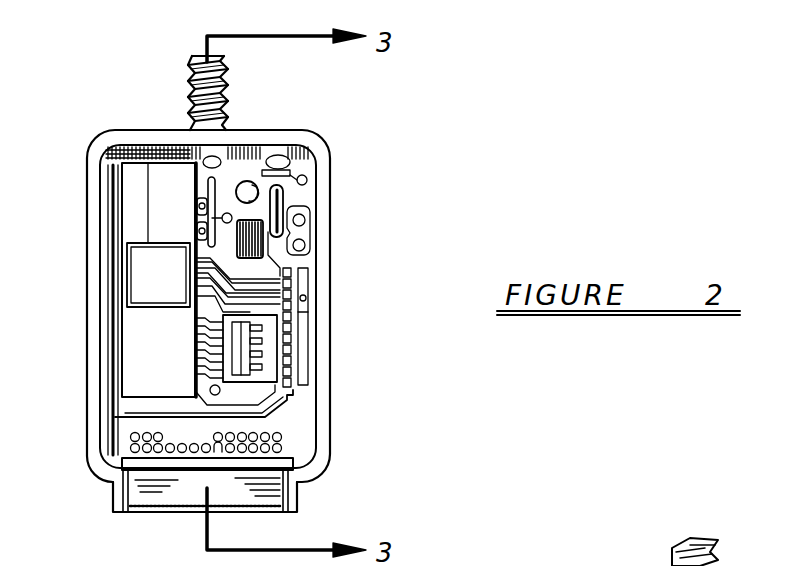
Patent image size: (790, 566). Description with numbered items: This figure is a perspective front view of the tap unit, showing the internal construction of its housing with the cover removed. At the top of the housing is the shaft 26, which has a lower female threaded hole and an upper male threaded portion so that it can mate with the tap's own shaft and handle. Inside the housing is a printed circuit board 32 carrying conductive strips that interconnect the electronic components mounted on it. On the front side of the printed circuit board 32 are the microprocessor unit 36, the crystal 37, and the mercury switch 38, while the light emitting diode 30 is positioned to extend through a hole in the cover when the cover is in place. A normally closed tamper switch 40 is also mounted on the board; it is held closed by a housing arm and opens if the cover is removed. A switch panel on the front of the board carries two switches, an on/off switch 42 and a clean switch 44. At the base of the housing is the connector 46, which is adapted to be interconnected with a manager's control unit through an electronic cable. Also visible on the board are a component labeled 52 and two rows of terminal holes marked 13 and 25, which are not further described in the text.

The shaft 26 is at (188, 83).
The light emitting diode 30 is at (250, 182).
The printed circuit board 32 is at (295, 168).
The microprocessor unit 36 is at (133, 233).
The crystal 37 is at (285, 204).
The mercury switch 38 is at (283, 238).
The tamper switch 40 is at (303, 355).
The on/off switch 42 is at (200, 332).
The clean switch 44 is at (197, 360).
The connector 46 is at (160, 489).
The capacitor 52 is at (252, 251).
The pin row 13 is at (216, 436).
The pin row 25 is at (216, 448).